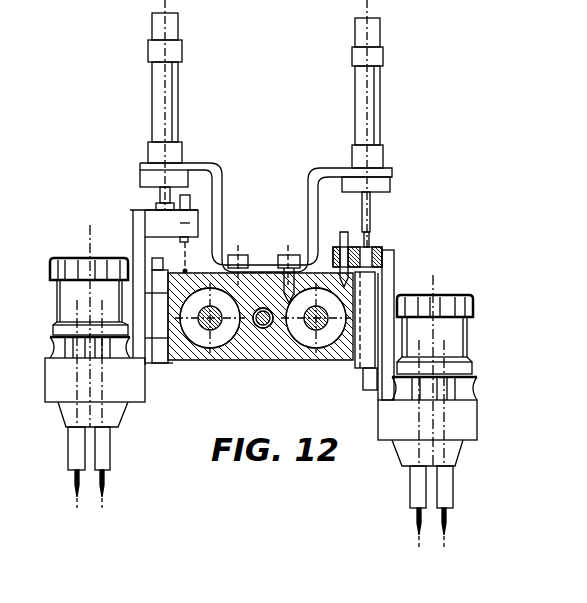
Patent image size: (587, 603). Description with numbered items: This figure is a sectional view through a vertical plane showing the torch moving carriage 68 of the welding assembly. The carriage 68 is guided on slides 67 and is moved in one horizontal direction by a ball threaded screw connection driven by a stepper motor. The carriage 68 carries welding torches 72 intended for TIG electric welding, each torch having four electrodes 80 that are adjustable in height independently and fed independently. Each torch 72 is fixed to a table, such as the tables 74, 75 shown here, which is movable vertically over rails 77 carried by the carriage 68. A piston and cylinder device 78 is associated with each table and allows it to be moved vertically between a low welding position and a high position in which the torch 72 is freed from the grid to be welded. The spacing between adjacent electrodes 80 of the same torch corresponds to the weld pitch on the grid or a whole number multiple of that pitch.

The slides 67 is at (215, 325).
The carriage 68 is at (265, 328).
The welding torch 72 is at (113, 298).
The table 74 is at (460, 418).
The table 75 is at (275, 366).
The rails 77 is at (368, 350).
The piston and cylinder device 78 is at (372, 125).
The electrode 80 is at (447, 488).